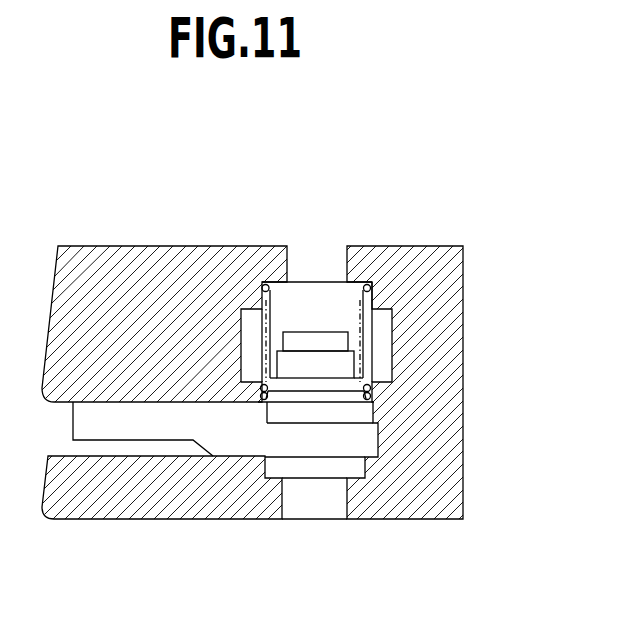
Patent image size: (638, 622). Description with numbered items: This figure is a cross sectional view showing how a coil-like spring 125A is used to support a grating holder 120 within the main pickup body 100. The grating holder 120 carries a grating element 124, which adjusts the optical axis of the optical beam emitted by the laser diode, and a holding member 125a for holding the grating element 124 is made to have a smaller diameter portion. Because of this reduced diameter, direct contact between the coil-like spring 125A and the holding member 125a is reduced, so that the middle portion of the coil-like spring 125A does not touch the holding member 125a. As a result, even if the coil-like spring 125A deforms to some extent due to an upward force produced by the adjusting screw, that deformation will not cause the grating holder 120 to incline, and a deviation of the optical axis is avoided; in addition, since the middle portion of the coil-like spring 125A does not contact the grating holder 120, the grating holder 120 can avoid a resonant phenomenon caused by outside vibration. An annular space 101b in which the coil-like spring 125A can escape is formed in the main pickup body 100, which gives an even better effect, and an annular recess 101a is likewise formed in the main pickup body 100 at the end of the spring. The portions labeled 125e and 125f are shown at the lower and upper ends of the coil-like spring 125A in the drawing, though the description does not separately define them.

The main pickup body 100 is at (208, 527).
The annular recess 101a is at (353, 288).
The annular space 101b is at (262, 338).
The grating holder 120 is at (135, 440).
The grating element 124 is at (310, 340).
The coil-like spring 125A is at (375, 360).
The holding member 125a is at (350, 366).
The seal bottom portion 125e is at (263, 400).
The seal top portion 125f is at (276, 288).